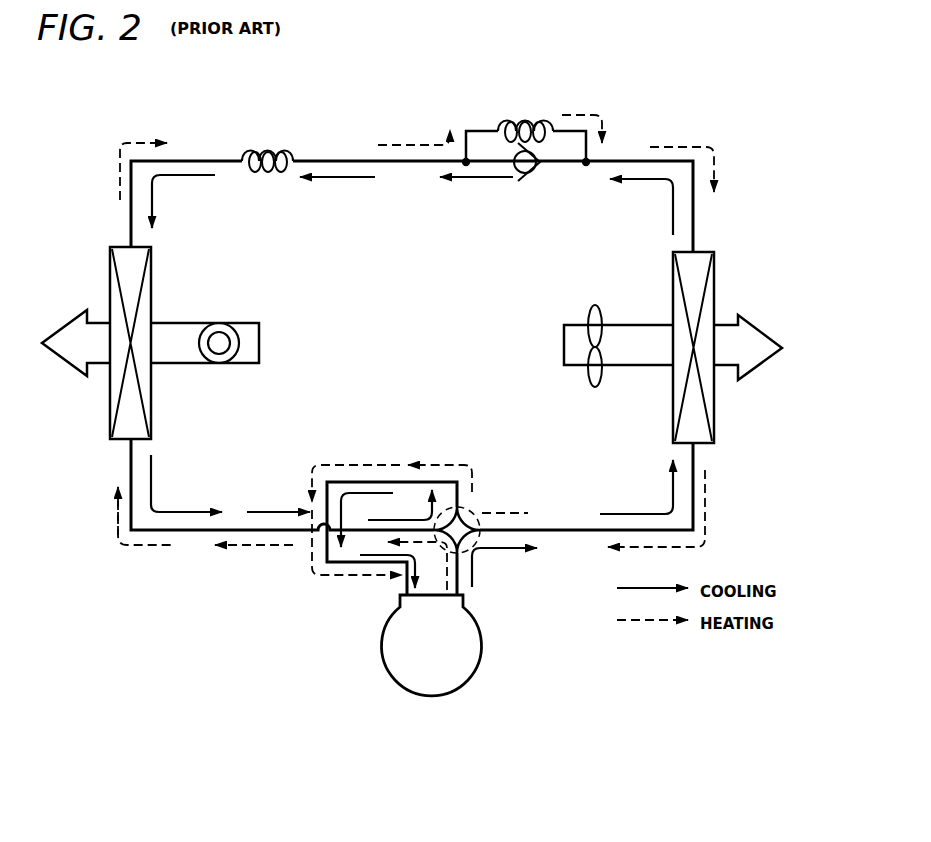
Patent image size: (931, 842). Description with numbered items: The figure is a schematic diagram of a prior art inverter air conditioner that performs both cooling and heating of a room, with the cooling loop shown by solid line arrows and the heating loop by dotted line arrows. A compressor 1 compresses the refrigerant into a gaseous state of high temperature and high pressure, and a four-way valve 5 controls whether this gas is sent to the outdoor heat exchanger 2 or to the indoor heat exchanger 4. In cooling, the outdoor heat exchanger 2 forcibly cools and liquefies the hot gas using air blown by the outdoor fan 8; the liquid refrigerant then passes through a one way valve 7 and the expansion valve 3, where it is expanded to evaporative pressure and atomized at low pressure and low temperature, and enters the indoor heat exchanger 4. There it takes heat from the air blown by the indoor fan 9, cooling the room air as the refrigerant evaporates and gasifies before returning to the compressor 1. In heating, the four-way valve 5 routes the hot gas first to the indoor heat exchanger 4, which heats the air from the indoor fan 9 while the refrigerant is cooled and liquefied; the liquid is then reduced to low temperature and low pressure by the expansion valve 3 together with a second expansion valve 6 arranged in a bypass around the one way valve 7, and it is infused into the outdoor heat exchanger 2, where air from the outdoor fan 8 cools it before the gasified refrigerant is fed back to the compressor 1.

The compressor 1 is at (466, 645).
The outdoor heat exchanger 2 is at (704, 250).
The expansion valve 3 is at (293, 155).
The indoor heat exchanger 4 is at (116, 247).
The four-way valve 5 is at (470, 510).
The expansion valve 6 is at (512, 126).
The one way valve 7 is at (530, 180).
The outdoor fan 8 is at (597, 306).
The indoor fan 9 is at (236, 325).